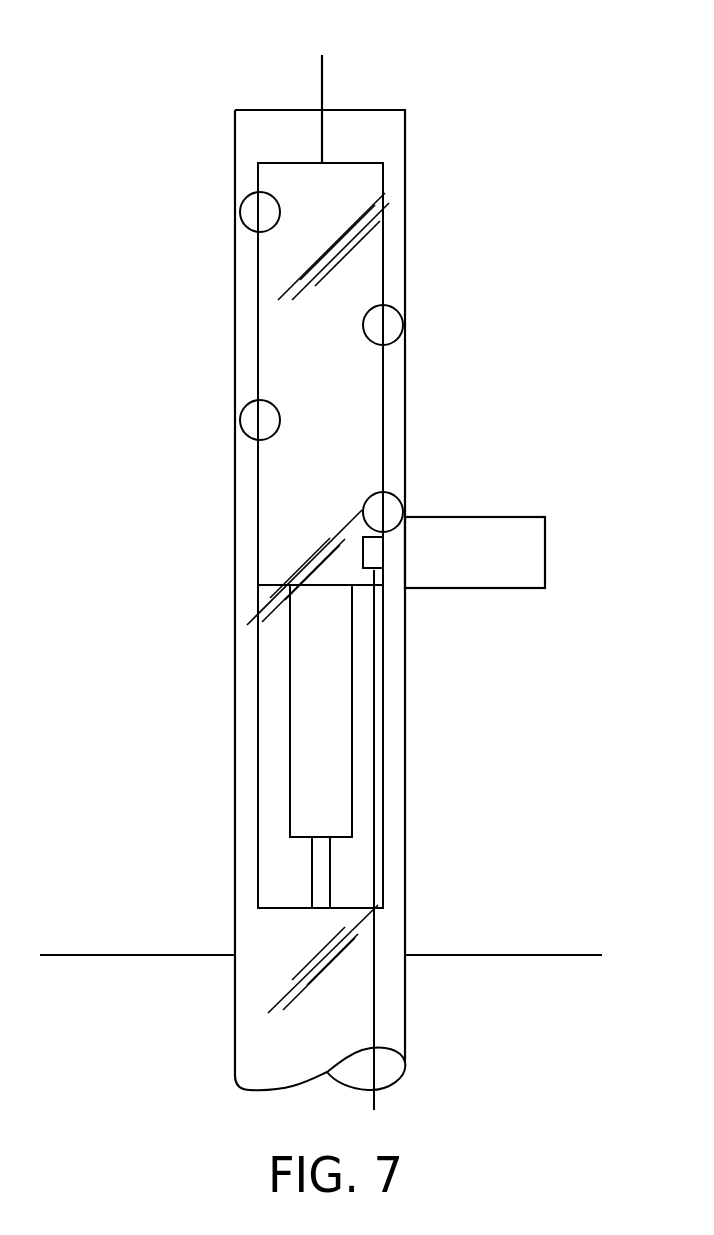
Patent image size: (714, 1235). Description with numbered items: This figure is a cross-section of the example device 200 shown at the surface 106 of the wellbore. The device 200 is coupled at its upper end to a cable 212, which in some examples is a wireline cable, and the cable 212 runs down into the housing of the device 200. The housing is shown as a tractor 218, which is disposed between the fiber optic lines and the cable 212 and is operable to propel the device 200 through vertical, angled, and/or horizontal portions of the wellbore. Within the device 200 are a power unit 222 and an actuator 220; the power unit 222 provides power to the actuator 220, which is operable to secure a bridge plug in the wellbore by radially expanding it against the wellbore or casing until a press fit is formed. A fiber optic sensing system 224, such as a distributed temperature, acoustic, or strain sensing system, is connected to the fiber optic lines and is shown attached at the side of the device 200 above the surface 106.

The surface 106 is at (443, 953).
The device 200 is at (292, 775).
The cable 212 is at (323, 84).
The tractor 218 is at (387, 402).
The actuator 220 is at (312, 855).
The power unit 222 is at (290, 662).
The fiber optic sensing system 224 is at (443, 515).